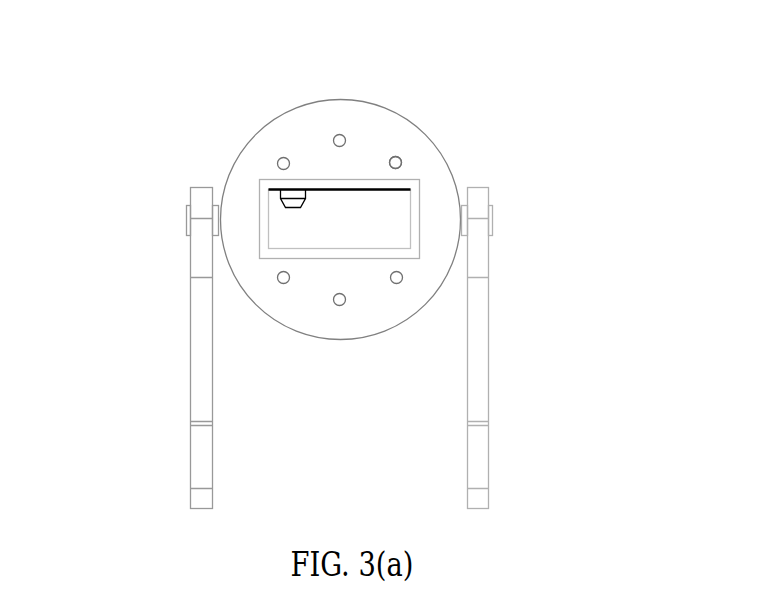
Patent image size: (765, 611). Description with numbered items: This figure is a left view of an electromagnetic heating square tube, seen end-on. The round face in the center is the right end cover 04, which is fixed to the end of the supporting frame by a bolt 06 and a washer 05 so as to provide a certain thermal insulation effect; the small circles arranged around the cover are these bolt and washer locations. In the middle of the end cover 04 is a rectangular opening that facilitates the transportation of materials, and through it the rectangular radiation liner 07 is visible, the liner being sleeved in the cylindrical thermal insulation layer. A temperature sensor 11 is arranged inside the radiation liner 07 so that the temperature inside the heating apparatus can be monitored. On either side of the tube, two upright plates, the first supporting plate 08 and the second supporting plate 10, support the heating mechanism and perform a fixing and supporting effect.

The right end cover 04 is at (392, 133).
The washer 05 is at (402, 155).
The bolt 06 is at (398, 162).
The radiation liner 07 is at (415, 251).
The supporting plate 1 08 is at (473, 342).
The supporting plate 2 10 is at (203, 358).
The temperature sensor 11 is at (295, 193).